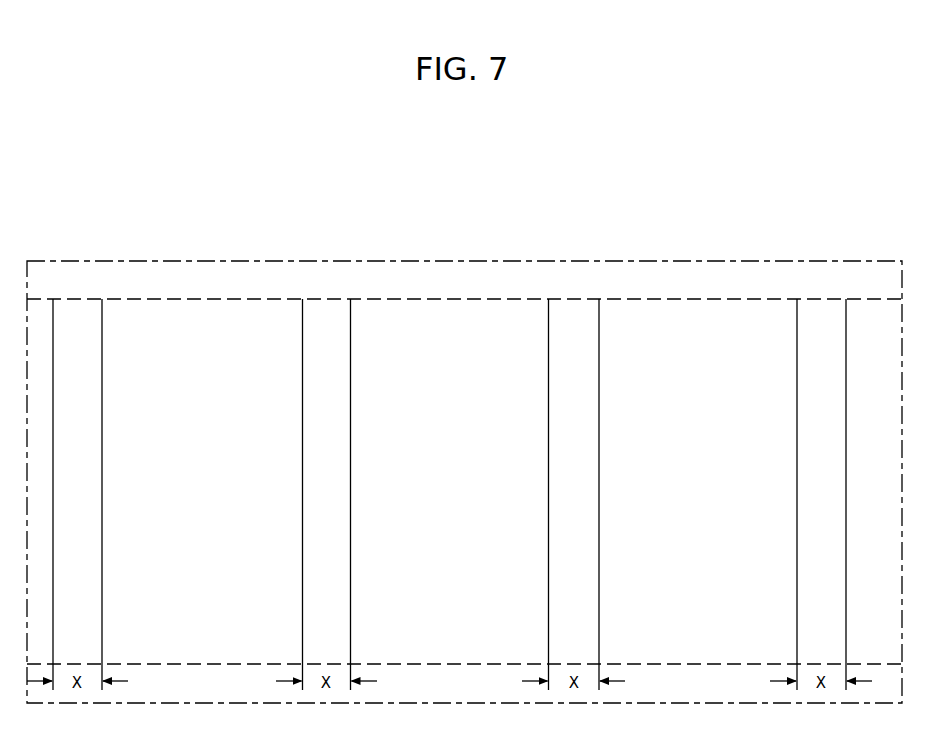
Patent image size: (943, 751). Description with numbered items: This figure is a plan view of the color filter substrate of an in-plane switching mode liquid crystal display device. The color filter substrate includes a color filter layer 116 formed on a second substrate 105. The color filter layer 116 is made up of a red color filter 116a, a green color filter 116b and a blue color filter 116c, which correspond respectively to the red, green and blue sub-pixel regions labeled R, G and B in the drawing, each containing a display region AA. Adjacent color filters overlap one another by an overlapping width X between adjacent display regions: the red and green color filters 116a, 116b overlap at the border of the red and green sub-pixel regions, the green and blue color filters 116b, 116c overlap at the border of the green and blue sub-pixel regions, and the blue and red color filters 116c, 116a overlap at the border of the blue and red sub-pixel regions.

The second substrate 105 is at (902, 700).
The color filter layer 116 is at (542, 127).
The red color filter 116a is at (247, 342).
The green color filter 116b is at (460, 367).
The blue color filter 116c is at (663, 343).